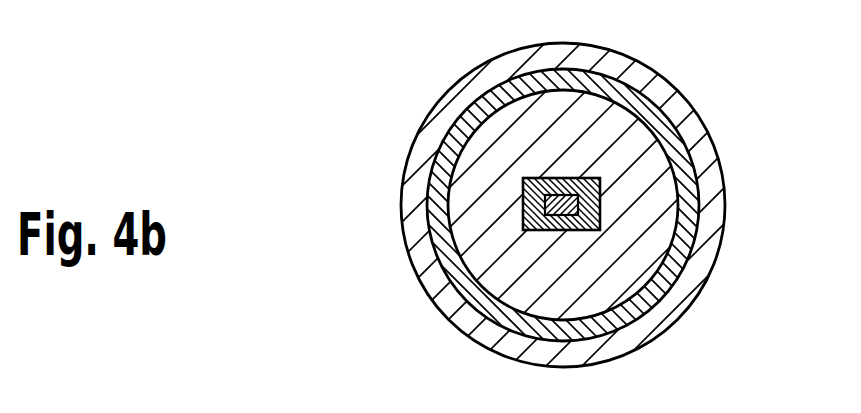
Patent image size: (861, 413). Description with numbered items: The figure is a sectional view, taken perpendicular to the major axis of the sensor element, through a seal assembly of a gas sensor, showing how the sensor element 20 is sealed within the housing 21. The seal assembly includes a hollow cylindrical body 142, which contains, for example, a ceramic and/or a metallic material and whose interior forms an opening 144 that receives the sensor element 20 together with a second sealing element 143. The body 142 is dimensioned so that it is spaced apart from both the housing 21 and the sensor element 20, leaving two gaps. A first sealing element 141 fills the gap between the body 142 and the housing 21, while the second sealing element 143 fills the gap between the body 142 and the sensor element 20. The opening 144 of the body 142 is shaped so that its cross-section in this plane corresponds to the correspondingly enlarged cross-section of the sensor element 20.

The sensor element 20 is at (566, 197).
The housing 21 is at (682, 109).
The first sealing element 141 is at (687, 209).
The hollow cylindrical body 142 is at (608, 278).
The second sealing element 143 is at (683, 259).
The opening 144 is at (548, 193).